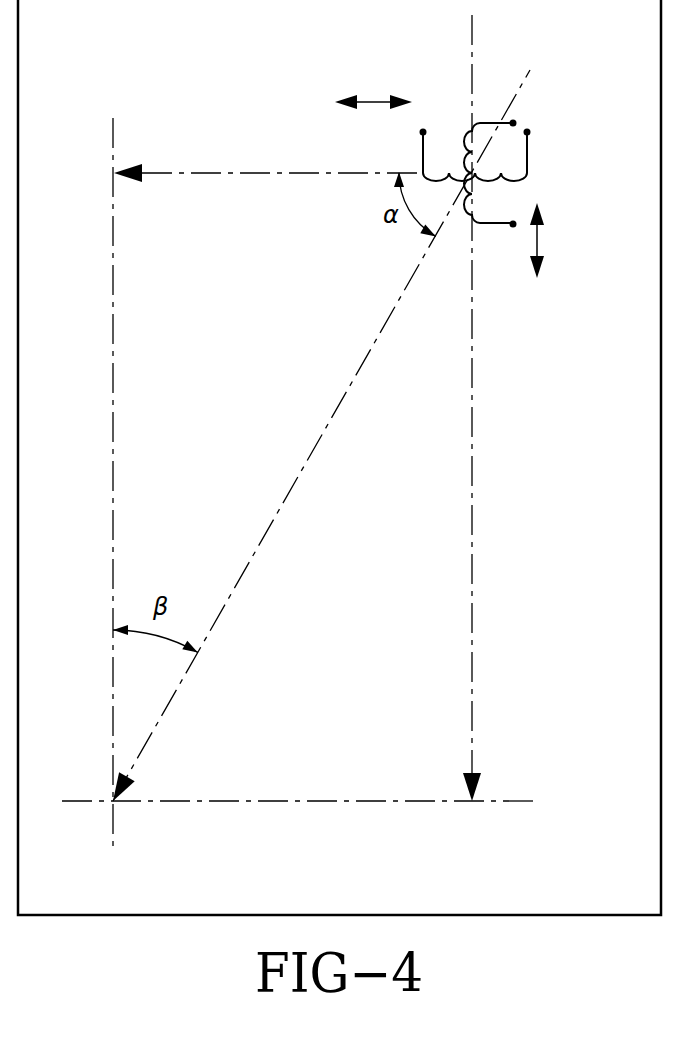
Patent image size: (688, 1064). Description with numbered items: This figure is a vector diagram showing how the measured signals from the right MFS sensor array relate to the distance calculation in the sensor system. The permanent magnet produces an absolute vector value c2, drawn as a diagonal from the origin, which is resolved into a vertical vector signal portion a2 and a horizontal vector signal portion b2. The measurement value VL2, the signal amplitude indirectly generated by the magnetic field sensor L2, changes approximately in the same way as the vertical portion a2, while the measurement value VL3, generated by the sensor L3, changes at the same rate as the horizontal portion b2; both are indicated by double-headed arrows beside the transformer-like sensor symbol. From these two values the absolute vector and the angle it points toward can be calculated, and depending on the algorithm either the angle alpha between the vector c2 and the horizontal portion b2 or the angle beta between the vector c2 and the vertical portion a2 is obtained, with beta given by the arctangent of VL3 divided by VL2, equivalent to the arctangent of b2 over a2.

The vertical vector signal portion a2 is at (485, 408).
The horizontal vector signal portion b2 is at (268, 192).
The absolute vector value c2 is at (321, 435).
The signal amplitude of MFS L3 VL3 is at (373, 81).
The signal amplitude of MFS L2 VL2 is at (580, 240).